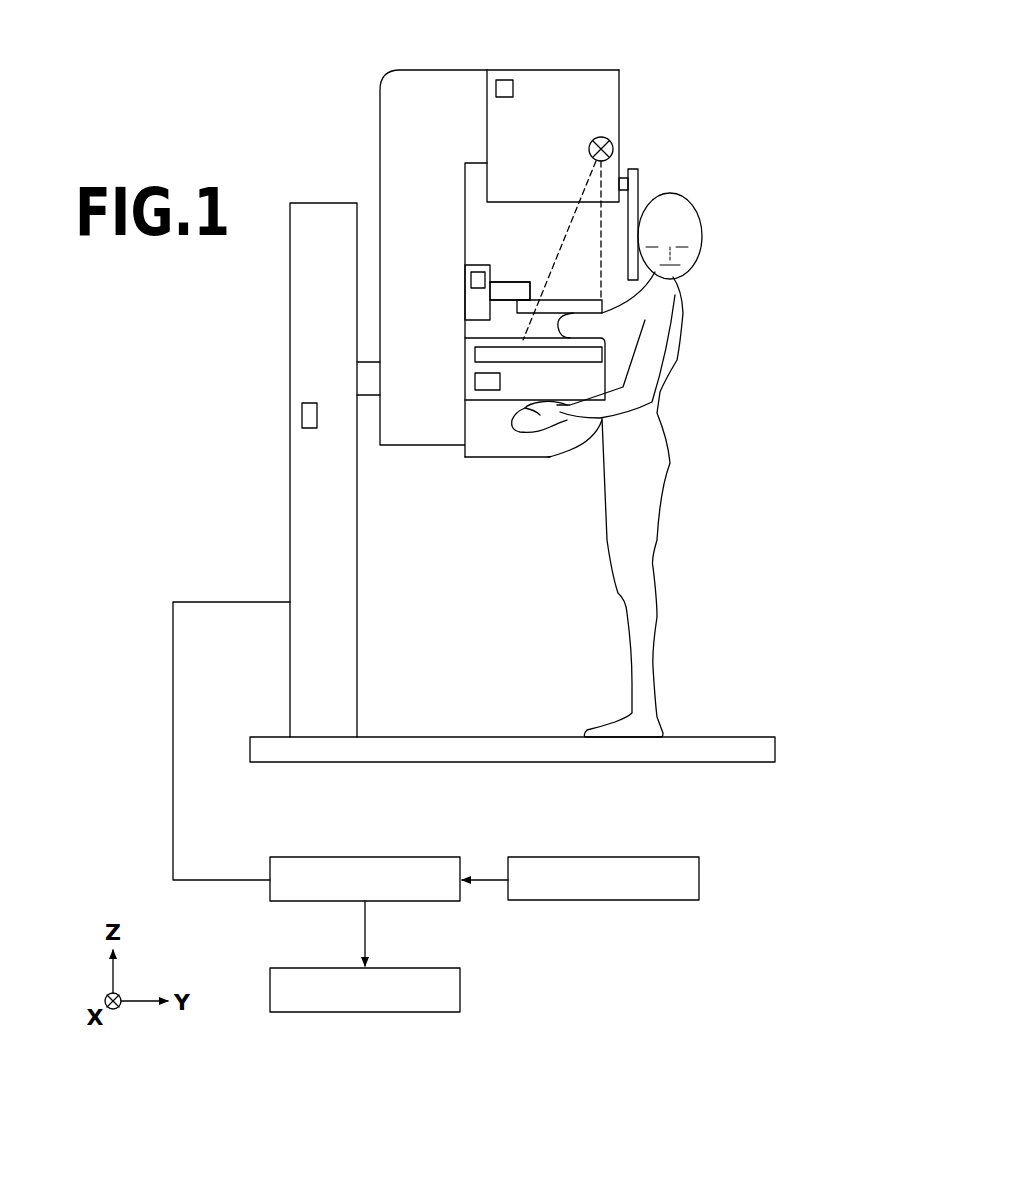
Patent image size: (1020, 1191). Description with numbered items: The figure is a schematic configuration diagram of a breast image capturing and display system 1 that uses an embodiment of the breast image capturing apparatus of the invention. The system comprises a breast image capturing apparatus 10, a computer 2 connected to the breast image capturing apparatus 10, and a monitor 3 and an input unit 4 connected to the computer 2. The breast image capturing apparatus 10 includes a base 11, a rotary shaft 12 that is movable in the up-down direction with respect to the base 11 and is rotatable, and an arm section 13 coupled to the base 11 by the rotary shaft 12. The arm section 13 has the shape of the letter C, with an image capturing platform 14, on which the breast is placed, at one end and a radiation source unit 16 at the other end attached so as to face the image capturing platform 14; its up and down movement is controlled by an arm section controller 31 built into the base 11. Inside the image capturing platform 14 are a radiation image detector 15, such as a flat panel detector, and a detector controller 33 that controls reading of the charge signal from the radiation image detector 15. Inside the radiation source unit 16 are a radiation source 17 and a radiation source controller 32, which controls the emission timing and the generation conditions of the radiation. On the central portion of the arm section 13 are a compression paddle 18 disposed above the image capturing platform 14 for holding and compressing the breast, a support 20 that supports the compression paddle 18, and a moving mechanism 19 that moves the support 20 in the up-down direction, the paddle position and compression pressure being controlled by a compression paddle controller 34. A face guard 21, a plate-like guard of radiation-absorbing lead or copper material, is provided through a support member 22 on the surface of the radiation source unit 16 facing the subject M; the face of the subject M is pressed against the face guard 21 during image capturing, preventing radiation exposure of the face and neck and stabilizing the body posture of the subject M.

The breast image capturing and display system 1 is at (288, 31).
The breast image capturing apparatus 10 is at (243, 65).
The base 11 is at (296, 333).
The rotary shaft 12 is at (367, 387).
The arm section 13 is at (380, 97).
The image capturing platform 14 is at (502, 400).
The radiation image detector 15 is at (563, 353).
The radiation source unit 16 is at (563, 70).
The radiation source 17 is at (600, 138).
The compression paddle 18 is at (573, 300).
The moving mechanism 19 is at (490, 263).
The support 20 is at (514, 282).
The face guard 21 is at (638, 190).
The support member 22 is at (622, 178).
The arm section controller 31 is at (302, 417).
The radiation source controller 32 is at (503, 80).
The detector controller 33 is at (485, 392).
The compression paddle controller 34 is at (465, 270).
The subject M is at (657, 412).
The computer 2 is at (420, 857).
The monitor 3 is at (421, 968).
The input unit 4 is at (661, 857).